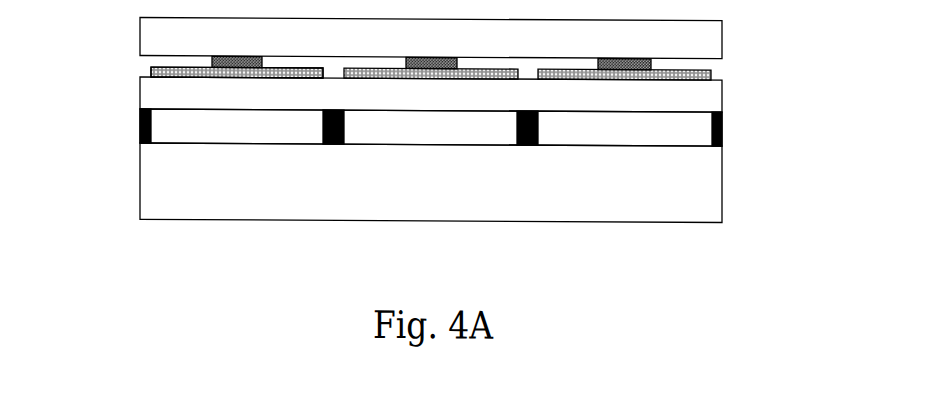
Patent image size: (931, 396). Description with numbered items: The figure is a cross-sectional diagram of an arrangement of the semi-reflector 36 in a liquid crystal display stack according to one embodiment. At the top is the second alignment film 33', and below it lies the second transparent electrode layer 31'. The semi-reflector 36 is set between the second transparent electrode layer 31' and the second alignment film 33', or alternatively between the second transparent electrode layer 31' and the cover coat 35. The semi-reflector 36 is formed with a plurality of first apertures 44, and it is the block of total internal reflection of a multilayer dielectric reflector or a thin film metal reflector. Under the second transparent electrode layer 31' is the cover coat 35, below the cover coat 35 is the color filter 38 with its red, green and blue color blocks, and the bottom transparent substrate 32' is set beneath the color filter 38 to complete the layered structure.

The second transparent electrode layer 31' is at (178, 53).
The bottom transparent substrate 32' is at (463, 183).
The second alignment film 33' is at (465, 39).
The cover coat 35 is at (140, 90).
The semi-reflector 36 is at (435, 55).
The color filter 38 is at (140, 124).
The first apertures 44 is at (557, 61).